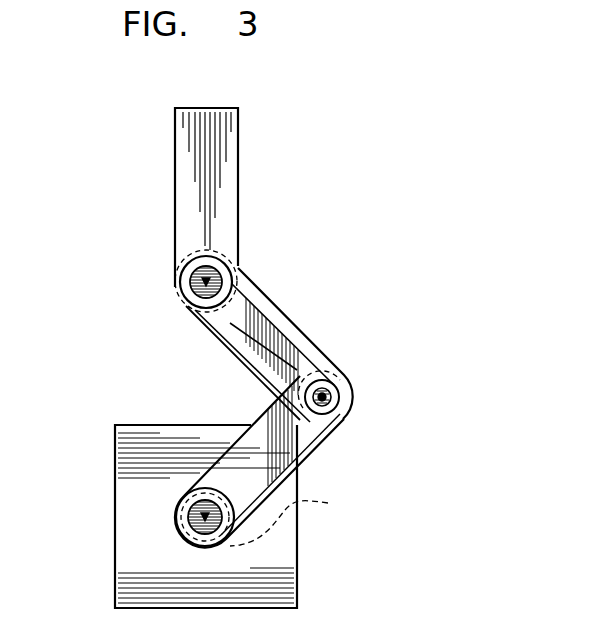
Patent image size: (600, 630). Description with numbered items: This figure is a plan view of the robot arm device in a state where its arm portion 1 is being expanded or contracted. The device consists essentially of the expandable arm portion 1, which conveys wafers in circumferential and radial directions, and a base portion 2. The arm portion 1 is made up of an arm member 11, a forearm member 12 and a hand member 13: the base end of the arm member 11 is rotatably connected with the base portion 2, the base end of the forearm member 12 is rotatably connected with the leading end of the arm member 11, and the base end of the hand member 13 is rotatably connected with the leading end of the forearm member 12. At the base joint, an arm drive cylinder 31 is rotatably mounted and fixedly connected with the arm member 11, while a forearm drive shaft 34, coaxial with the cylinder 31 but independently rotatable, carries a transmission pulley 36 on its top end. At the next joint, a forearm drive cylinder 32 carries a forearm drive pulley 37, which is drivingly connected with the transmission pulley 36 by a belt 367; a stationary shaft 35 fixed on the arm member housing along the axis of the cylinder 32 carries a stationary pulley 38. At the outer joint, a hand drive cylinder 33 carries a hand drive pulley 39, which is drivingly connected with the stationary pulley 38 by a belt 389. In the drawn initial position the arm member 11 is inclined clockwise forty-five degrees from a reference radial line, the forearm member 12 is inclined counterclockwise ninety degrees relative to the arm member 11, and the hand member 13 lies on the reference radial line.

The arm portion 1 is at (315, 328).
The base portion 2 is at (298, 538).
The arm member 11 is at (335, 446).
The forearm member 12 is at (293, 332).
The hand member 13 is at (228, 212).
The arm drive cylinder 31 is at (299, 517).
The forearm drive cylinder 32 is at (312, 397).
The hand drive cylinder 33 is at (193, 266).
The forearm drive shaft 34 is at (193, 495).
The stationary shaft 35 is at (282, 424).
The transmission pulley 36 is at (185, 516).
The forearm drive pulley 37 is at (322, 397).
The stationary pulley 38 is at (285, 345).
The hand drive pulley 39 is at (190, 281).
The belt 367 is at (245, 450).
The belt 389 is at (200, 320).